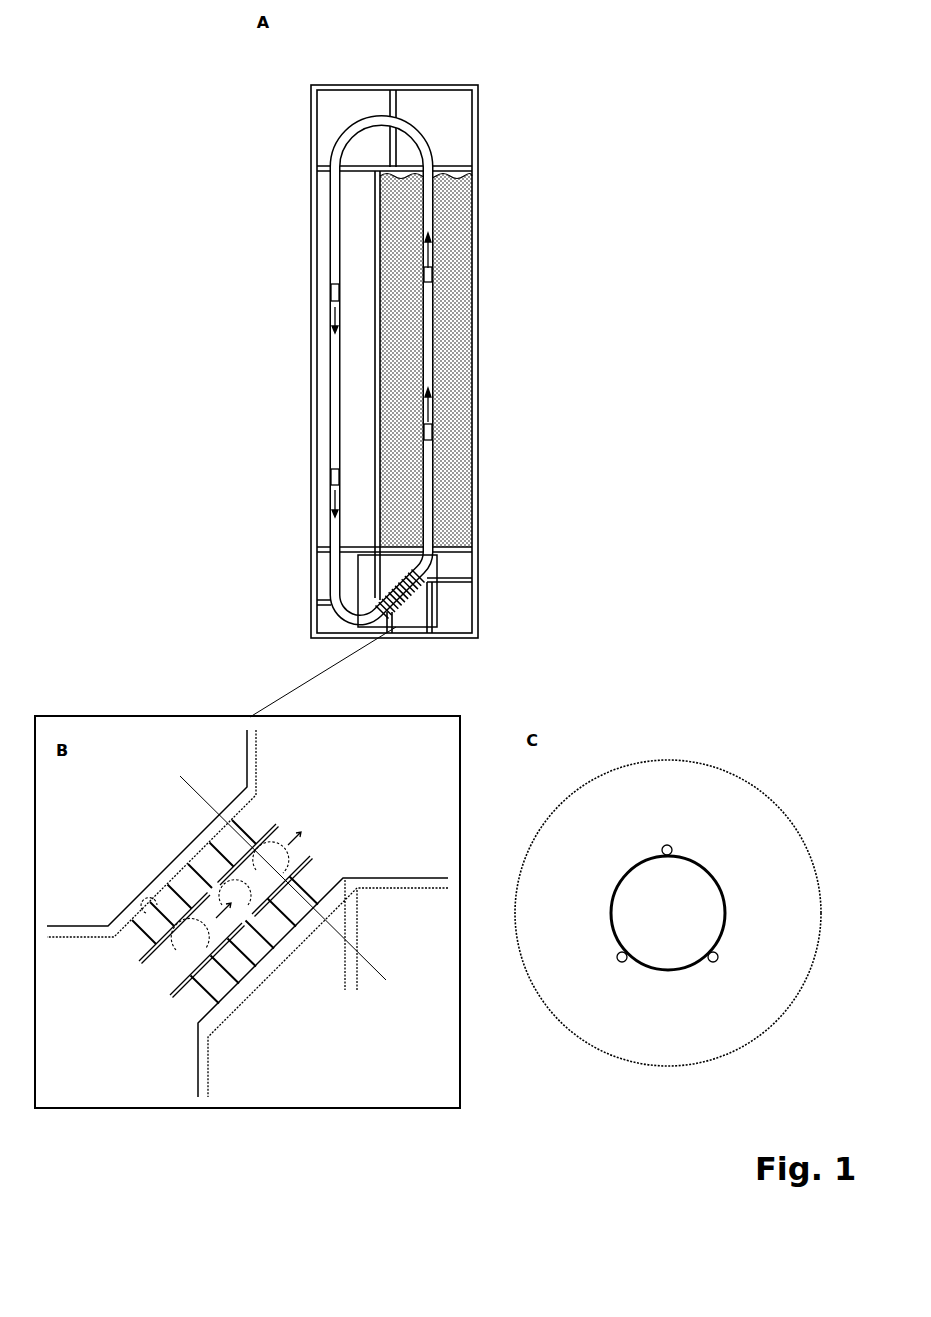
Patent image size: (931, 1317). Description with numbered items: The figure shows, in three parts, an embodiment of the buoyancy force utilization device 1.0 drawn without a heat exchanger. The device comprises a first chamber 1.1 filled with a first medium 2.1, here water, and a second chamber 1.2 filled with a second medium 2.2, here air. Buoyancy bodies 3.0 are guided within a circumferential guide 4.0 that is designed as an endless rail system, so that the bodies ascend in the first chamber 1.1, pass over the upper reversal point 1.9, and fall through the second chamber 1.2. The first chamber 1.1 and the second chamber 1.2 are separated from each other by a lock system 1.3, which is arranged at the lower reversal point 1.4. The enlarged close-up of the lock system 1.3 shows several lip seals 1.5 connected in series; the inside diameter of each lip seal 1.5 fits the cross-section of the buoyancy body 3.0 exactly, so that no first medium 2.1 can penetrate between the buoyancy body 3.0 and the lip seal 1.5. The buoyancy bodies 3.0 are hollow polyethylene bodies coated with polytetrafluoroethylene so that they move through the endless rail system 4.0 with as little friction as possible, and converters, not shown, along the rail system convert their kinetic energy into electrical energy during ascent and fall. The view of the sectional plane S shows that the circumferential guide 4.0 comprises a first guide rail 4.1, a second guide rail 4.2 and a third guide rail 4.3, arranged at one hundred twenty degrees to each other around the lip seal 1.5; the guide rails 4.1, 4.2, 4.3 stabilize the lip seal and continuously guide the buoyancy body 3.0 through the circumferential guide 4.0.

The buoyancy force utilization device 1.0 is at (263, 134).
The first chamber 1.1 is at (450, 220).
The second chamber 1.2 is at (362, 247).
The lock system 1.3 is at (335, 612).
The lower reversal point 1.4 is at (408, 607).
The lip seal 1.5 is at (188, 873).
The upper reversal point 1.9 is at (378, 118).
The first medium 2.1 is at (453, 268).
The second medium 2.2 is at (360, 360).
The buoyancy body 3.0 is at (434, 430).
The circumferential guide 4.0 is at (435, 488).
The first guide rail 4.1 is at (182, 950).
The second guide rail 4.2 is at (622, 963).
The third guide rail 4.3 is at (713, 963).
The sectional plane S- S is at (284, 877).